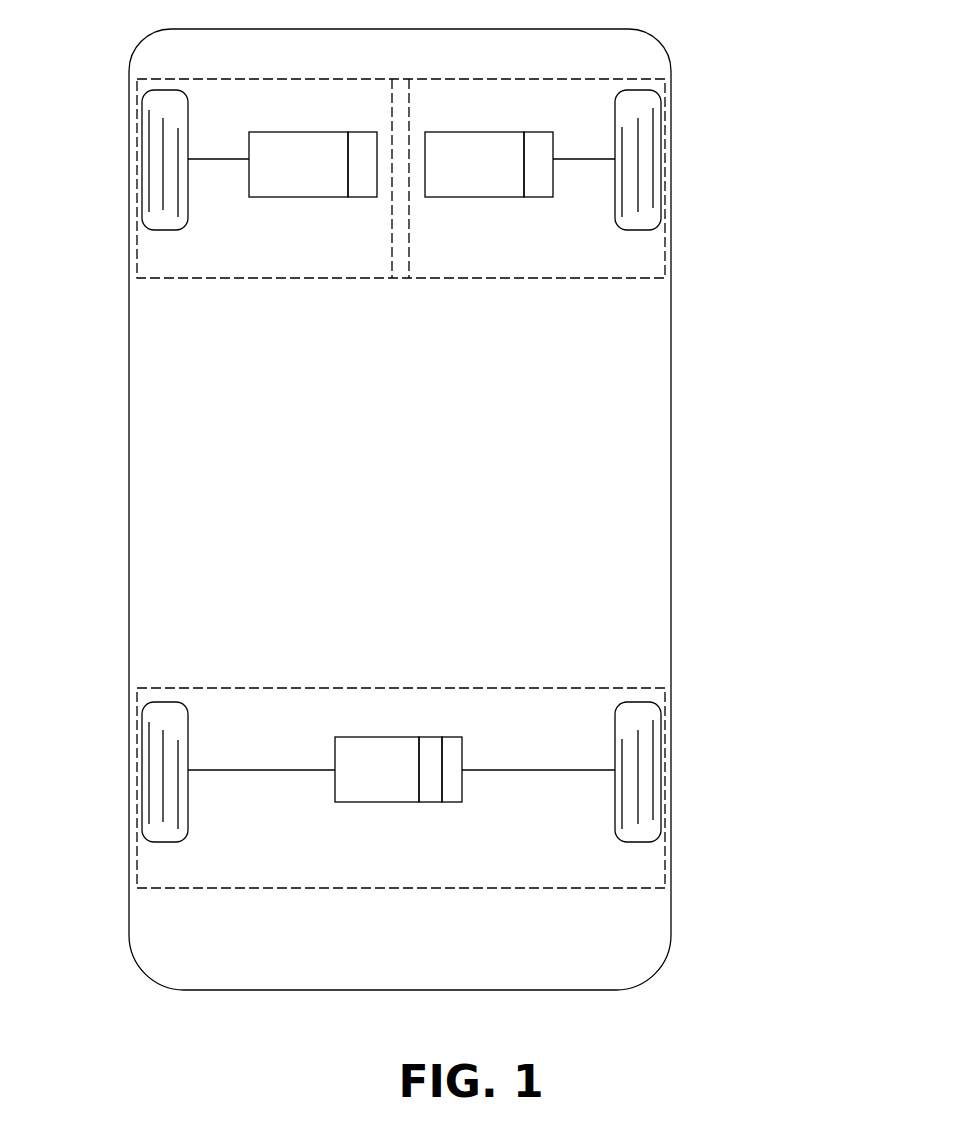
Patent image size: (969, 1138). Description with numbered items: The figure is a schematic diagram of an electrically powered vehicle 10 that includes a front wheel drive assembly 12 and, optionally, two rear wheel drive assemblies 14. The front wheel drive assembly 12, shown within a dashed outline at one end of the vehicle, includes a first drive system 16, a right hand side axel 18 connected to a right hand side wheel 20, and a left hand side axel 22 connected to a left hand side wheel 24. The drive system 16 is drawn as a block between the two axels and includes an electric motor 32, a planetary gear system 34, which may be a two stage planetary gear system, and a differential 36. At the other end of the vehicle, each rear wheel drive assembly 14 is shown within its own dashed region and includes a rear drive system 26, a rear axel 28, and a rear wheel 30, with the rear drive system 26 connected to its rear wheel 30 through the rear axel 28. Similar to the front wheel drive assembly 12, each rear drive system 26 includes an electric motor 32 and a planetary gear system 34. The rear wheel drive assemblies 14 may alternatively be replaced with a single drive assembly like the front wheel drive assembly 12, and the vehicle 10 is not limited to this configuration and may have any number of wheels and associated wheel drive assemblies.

The electrically powered vehicle 10 is at (720, 62).
The front wheel drive assembly 12 is at (602, 687).
The rear wheel drive assembly 14 is at (193, 278).
The first drive system 16 is at (425, 732).
The right hand side axel 18 is at (540, 768).
The right hand side wheel 20 is at (638, 702).
The left hand side axel 22 is at (262, 768).
The left hand side wheel 24 is at (165, 702).
The rear drive system 26 is at (401, 480).
The rear axel 28 is at (218, 160).
The rear wheel 30 is at (663, 195).
The electric motor 32 is at (303, 147).
The planetary gear system 34 is at (315, 199).
The differential 36 is at (447, 804).